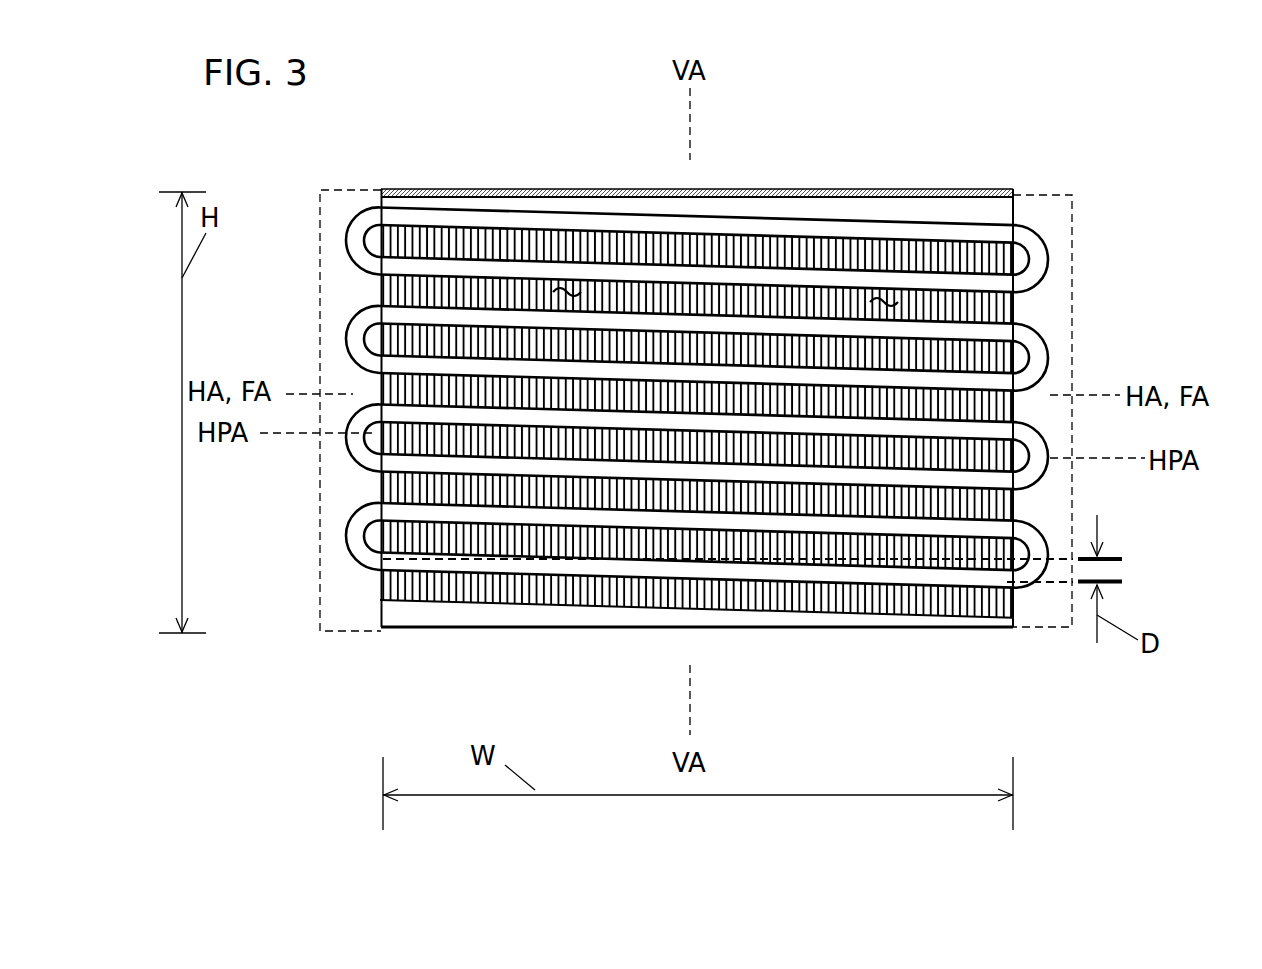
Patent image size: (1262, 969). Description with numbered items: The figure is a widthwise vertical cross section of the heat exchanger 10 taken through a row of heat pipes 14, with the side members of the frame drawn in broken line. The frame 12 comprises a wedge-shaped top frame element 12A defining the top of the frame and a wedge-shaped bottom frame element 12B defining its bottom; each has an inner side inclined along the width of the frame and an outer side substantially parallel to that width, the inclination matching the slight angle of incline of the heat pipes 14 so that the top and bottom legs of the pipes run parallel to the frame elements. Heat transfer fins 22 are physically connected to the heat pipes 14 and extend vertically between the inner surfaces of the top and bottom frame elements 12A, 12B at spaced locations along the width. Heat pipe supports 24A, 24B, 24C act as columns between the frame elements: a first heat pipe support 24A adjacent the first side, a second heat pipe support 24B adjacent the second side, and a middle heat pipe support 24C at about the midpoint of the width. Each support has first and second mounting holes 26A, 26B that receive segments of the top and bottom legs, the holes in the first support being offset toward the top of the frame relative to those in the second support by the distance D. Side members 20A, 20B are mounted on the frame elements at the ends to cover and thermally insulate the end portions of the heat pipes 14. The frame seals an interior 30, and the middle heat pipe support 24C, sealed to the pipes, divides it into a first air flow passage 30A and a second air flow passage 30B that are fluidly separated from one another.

The heat exchanger 10 is at (851, 674).
The frame 12 is at (656, 435).
The top frame element 12A is at (958, 196).
The bottom frame element 12B is at (422, 630).
The heat pipes 14 is at (1049, 251).
The side member 20A is at (346, 189).
The side member 20B is at (1048, 628).
The heat transfer fins 22 is at (810, 603).
The first heat pipe support 24A is at (383, 291).
The second heat pipe support 24B is at (1010, 607).
The middle heat pipe support 24C is at (690, 597).
The first mounting hole 26A is at (381, 327).
The second mounting hole 26B is at (383, 375).
The interior 30 is at (477, 600).
The first air flow passage 30A is at (570, 290).
The second air flow passage 30B is at (887, 299).